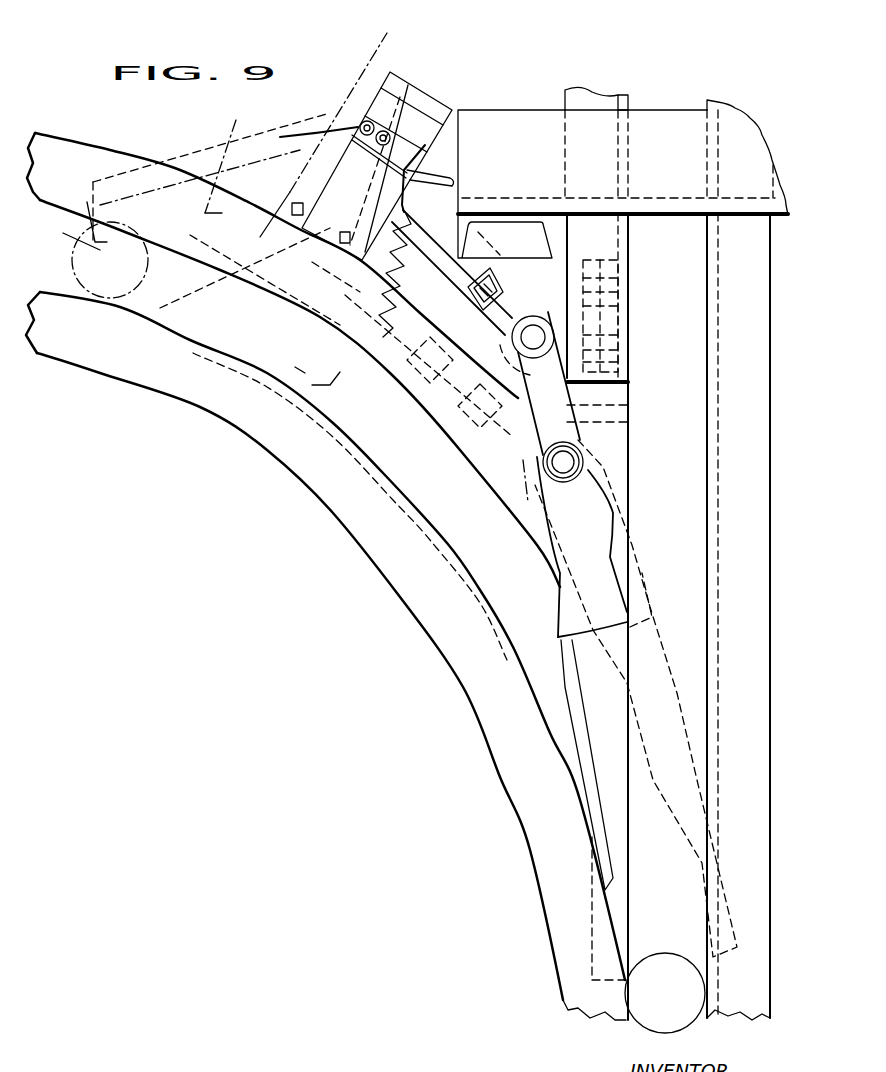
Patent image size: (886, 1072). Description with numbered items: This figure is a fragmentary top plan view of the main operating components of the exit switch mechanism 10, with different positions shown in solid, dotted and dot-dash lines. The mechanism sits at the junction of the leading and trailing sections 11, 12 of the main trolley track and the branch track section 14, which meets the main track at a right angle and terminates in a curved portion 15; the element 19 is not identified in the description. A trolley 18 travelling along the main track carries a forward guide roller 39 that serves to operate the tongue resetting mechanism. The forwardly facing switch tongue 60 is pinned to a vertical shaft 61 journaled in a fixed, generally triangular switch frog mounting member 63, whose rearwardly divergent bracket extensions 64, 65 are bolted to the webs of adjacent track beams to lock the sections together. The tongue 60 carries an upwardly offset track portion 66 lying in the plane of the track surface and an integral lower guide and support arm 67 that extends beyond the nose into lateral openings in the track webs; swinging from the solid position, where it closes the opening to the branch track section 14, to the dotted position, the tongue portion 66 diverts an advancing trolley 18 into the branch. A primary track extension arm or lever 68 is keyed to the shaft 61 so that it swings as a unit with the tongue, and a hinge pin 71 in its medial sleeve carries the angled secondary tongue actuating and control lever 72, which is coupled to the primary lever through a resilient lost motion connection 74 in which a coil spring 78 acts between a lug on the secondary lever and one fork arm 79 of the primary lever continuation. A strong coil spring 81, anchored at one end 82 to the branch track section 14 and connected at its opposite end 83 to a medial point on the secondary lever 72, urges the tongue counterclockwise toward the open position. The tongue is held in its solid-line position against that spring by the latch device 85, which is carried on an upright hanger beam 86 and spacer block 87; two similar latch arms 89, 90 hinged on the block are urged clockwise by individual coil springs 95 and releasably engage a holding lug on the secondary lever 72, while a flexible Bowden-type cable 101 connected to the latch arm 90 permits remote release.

The exit switch mechanism 10 is at (386, 32).
The leading section of main track 11 is at (748, 838).
The trailing section of main track 12 is at (62, 234).
The branch track section 14 is at (122, 150).
The curved portion of branch track 15 is at (497, 712).
The trolley 18 is at (604, 1032).
The top plate 19 is at (560, 83).
The forward guide roller 39 is at (690, 955).
The switch tongue 60 is at (558, 608).
The vertical shaft 61 is at (570, 462).
The switch frog mounting member 63 is at (615, 447).
The bracket extension 64 is at (620, 249).
The bracket extension 65 is at (377, 390).
The upwardly offset track portion 66 is at (705, 718).
The lower guide and support arm 67 is at (700, 923).
The primary track extension arm or lever 68 is at (565, 393).
The hinge pin 71 is at (533, 330).
The secondary tongue actuating and control lever 72 is at (287, 150).
The resilient lost motion connection 74 is at (509, 285).
The coil spring 78 is at (486, 272).
The fork arm 79 is at (470, 276).
The strong coil spring 81 is at (407, 236).
The anchored end of coil spring 82 is at (329, 379).
The opposite end of coil spring 83 is at (428, 150).
The latch device 85 is at (328, 103).
The upright hanger beam 86 is at (440, 170).
The spacer block 87 is at (432, 118).
The latch arm 89 is at (357, 188).
The latch arm 90 is at (343, 152).
The coil spring 95 is at (402, 112).
The flexible cable 101 is at (323, 277).